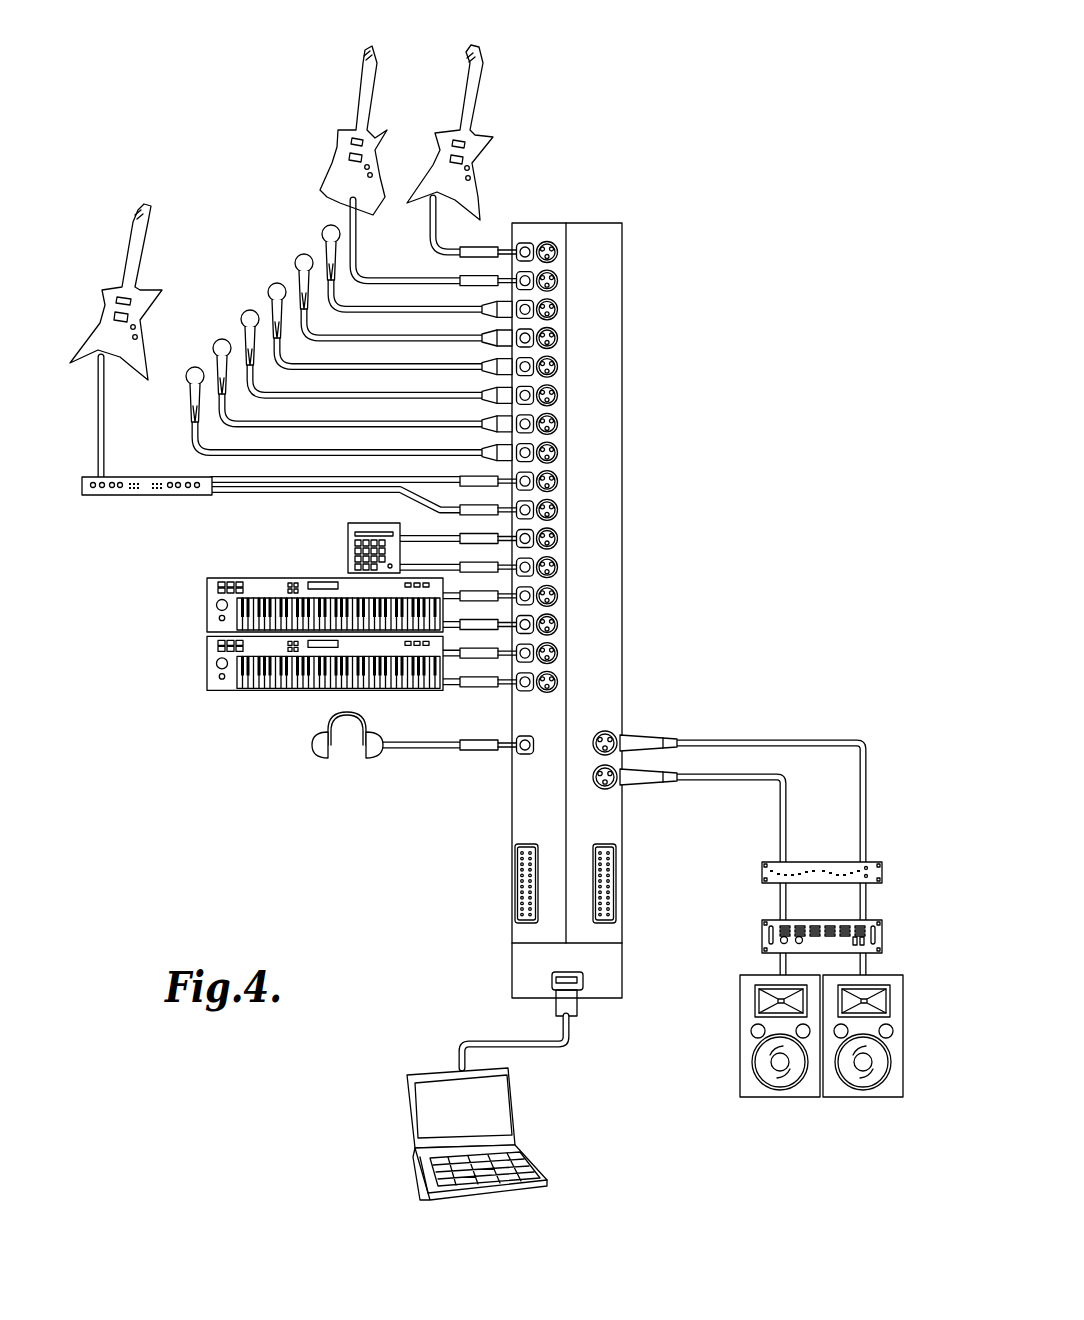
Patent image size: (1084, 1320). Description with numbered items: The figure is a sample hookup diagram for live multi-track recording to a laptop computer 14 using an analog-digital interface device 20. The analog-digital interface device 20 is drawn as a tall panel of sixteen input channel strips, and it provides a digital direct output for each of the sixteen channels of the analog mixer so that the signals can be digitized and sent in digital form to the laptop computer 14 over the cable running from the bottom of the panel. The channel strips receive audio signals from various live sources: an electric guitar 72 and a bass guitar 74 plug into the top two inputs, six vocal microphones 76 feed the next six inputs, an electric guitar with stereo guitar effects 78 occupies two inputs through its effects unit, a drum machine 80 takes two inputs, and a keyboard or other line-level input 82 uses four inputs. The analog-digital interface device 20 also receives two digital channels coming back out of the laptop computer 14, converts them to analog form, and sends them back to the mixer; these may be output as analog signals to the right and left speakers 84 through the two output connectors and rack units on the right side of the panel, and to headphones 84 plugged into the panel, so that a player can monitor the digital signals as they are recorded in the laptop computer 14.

The laptop computer 14 is at (410, 1118).
The analog-digital interface device 20 is at (620, 972).
The electric guitar 72 is at (490, 142).
The bass guitar 74 is at (335, 145).
The vocal microphones 76 is at (320, 232).
The electric guitar with stereo guitar effects 78 is at (105, 288).
The drum machine 80 is at (348, 532).
The keyboard or other line-level input 82 is at (206, 603).
The speakers and headphones 84 is at (312, 744).